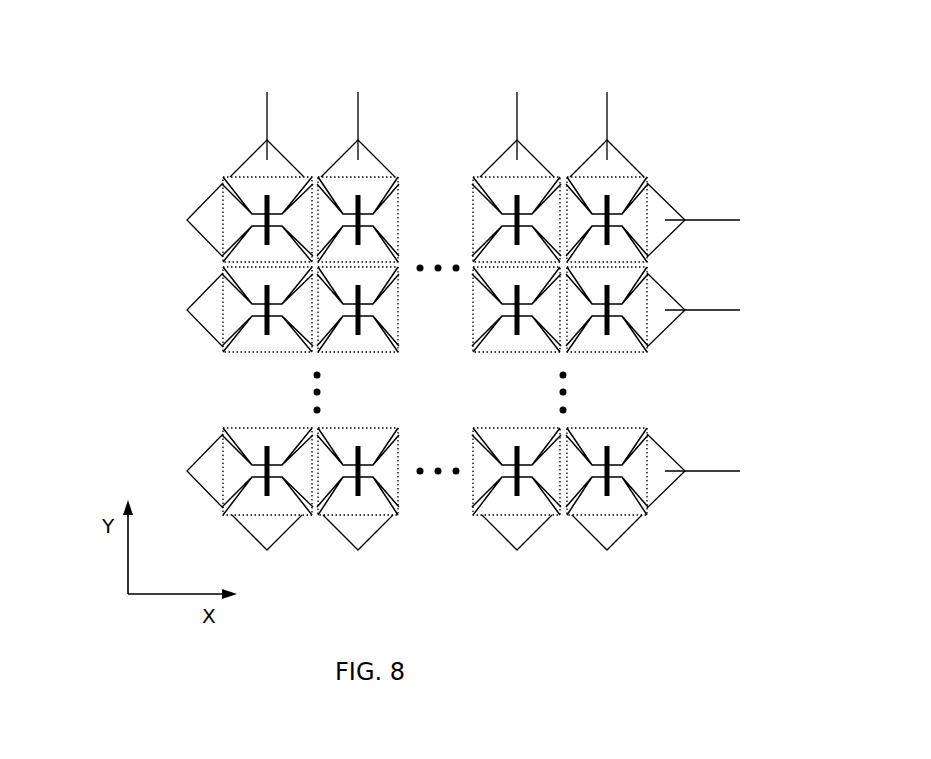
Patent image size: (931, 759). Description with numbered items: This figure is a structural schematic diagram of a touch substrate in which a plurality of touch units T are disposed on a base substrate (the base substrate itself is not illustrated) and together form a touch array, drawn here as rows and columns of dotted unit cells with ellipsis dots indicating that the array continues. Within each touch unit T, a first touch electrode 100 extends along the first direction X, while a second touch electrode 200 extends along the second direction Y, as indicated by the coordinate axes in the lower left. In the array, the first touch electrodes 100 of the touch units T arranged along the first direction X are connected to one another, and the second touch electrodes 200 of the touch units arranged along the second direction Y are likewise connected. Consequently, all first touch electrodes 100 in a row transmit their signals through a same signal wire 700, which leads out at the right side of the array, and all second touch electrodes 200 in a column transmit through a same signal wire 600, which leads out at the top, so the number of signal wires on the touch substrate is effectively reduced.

The first touch electrode 100 is at (231, 223).
The second touch electrode 200 is at (251, 256).
The touch unit T is at (214, 202).
The signal wire 600 is at (256, 117).
The signal wire 700 is at (724, 213).